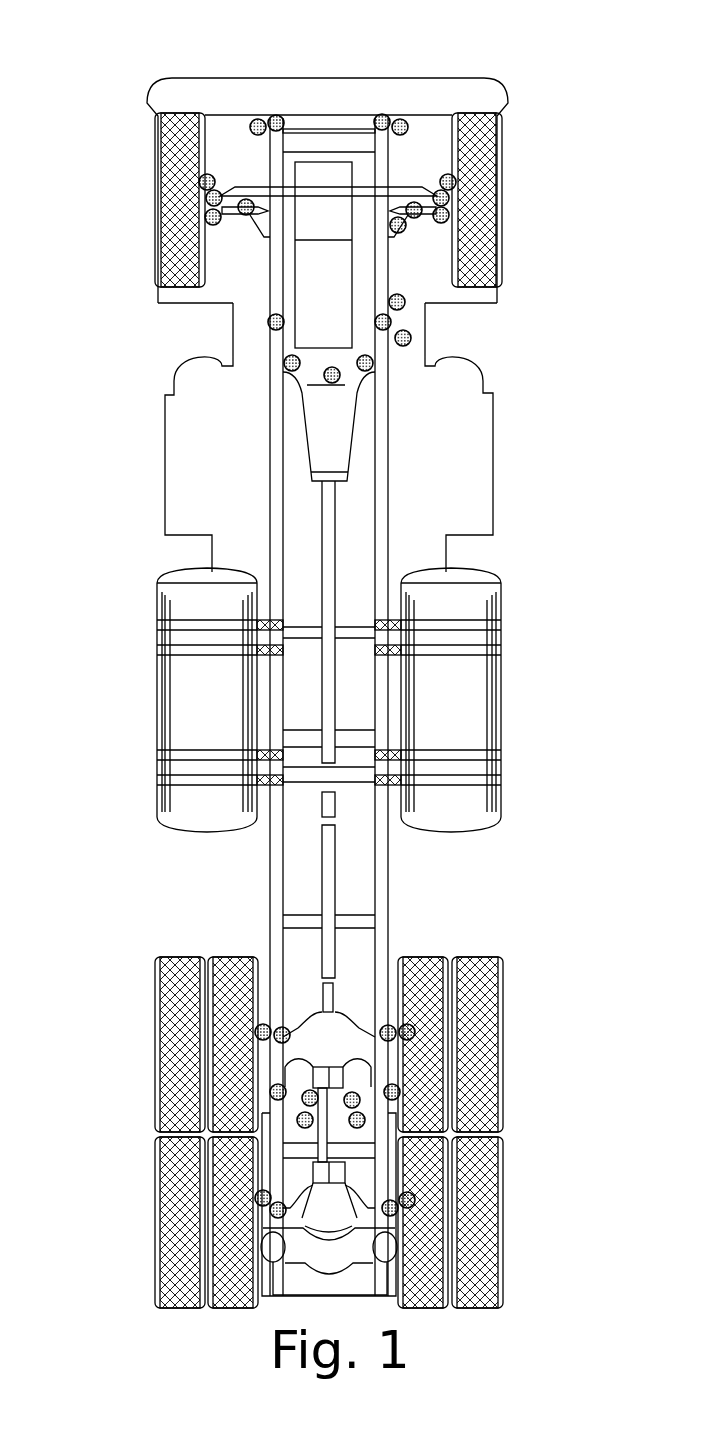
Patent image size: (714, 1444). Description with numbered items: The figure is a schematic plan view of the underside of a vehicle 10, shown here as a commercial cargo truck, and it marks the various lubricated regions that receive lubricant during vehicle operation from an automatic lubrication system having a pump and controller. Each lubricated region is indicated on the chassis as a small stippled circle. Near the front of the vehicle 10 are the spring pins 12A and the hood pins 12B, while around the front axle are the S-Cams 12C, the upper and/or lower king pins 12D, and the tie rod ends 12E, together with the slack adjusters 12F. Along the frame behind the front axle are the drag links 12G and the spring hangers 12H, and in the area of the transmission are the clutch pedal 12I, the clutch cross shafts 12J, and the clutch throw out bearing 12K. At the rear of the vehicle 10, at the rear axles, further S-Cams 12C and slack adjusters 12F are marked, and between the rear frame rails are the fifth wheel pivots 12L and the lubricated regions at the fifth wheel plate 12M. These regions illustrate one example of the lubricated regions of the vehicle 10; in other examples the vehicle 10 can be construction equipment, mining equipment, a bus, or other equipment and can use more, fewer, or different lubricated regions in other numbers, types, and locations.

The vehicle 10 is at (493, 490).
The spring pins 12A is at (257, 119).
The hood pins 12B is at (277, 115).
The S-Cams 12C is at (200, 178).
The upper and/or lower king pins 12D is at (206, 197).
The tie rod ends 12E is at (205, 217).
The slack adjusters 12F is at (243, 215).
The drag links 12G is at (403, 232).
The spring hangers 12H is at (268, 322).
The clutch pedal 12I is at (405, 346).
The clutch cross shafts 12J is at (285, 365).
The clutch throw out bearing 12K is at (327, 383).
The fifth wheel pivots 12L is at (270, 1091).
The fifth wheel plate 12M is at (302, 1100).